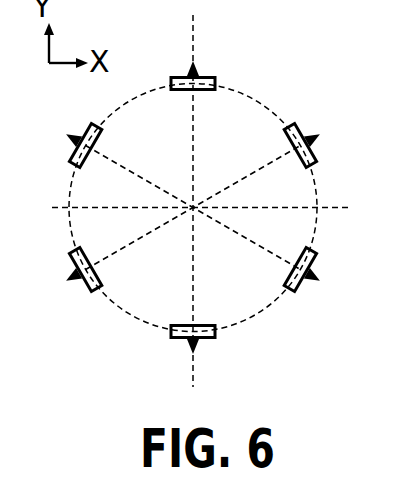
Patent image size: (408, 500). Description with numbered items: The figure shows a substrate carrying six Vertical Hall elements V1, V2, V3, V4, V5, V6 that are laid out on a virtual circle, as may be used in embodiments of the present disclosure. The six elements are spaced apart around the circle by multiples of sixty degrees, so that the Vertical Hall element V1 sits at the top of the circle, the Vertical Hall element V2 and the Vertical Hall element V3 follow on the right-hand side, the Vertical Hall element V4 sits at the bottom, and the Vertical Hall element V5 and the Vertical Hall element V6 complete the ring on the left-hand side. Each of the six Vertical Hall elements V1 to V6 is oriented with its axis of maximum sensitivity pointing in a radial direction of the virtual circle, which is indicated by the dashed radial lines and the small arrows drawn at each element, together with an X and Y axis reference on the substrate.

The Vertical Hall element V1 is at (215, 68).
The Vertical Hall element V2 is at (325, 150).
The Vertical Hall element V3 is at (307, 291).
The Vertical Hall element V4 is at (206, 357).
The Vertical Hall element V5 is at (67, 273).
The Vertical Hall element V6 is at (67, 146).